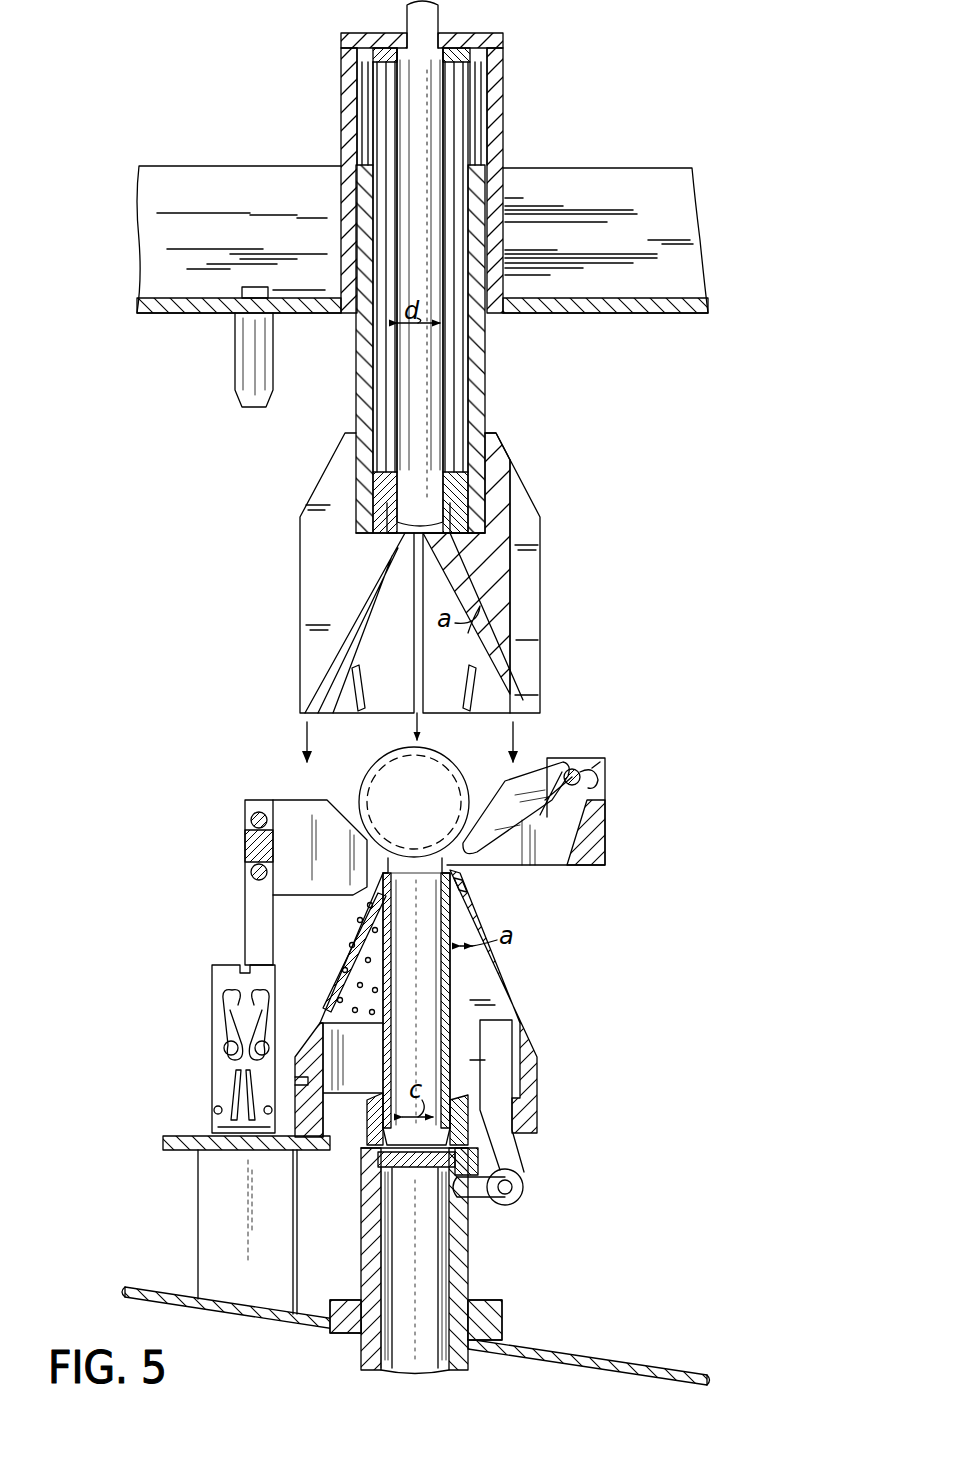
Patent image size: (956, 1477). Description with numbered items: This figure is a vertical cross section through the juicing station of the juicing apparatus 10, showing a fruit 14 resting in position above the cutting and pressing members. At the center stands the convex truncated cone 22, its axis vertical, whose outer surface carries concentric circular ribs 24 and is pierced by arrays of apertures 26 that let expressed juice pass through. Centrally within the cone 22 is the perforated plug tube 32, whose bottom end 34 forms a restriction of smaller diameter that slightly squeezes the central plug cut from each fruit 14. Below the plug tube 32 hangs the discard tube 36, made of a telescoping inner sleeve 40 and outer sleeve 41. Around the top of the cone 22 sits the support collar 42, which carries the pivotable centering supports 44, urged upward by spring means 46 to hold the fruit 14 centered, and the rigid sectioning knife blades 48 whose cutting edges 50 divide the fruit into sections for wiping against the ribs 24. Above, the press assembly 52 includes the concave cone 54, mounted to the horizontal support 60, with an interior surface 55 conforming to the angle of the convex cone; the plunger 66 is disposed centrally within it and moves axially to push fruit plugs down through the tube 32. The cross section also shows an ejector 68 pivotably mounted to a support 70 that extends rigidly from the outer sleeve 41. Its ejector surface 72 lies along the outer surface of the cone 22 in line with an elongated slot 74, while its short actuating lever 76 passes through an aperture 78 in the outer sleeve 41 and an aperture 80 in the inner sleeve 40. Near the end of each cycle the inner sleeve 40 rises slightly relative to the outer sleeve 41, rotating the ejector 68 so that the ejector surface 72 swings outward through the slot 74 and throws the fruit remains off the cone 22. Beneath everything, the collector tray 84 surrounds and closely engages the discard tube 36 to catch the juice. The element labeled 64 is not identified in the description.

The juicing apparatus 10 is at (690, 427).
The citrus fruit 14 is at (397, 775).
The convex truncated cone 22 is at (333, 953).
The circular ribs 24 is at (330, 992).
The apertures 26 is at (350, 940).
The perforated plug tube 32 is at (445, 970).
The bottom end of plug tube 34 is at (380, 1160).
The discard tube 36 is at (468, 1255).
The inner sleeve 40 is at (437, 1293).
The outer sleeve 41 is at (361, 1243).
The support collar 42 is at (607, 815).
The centering supports 44 is at (528, 780).
The spring means 46 is at (575, 770).
The sectioning knife blades 48 is at (290, 845).
The cutting edge 50 is at (345, 786).
The press assembly 52 is at (536, 478).
The concave cone 54 is at (298, 542).
The interior surface 55 is at (402, 642).
The horizontal support 60 is at (662, 173).
The housing 64 is at (320, 578).
The plunger 66 is at (430, 388).
The ejectors 68 is at (518, 1150).
The supports 70 is at (487, 1206).
The ejector surface 72 is at (475, 930).
The elongated slots 74 is at (463, 915).
The actuating lever 76 is at (466, 1178).
The aperture in outer sleeve 78 is at (456, 1168).
The aperture in inner sleeve 80 is at (443, 1200).
The collector tray 84 is at (549, 1349).